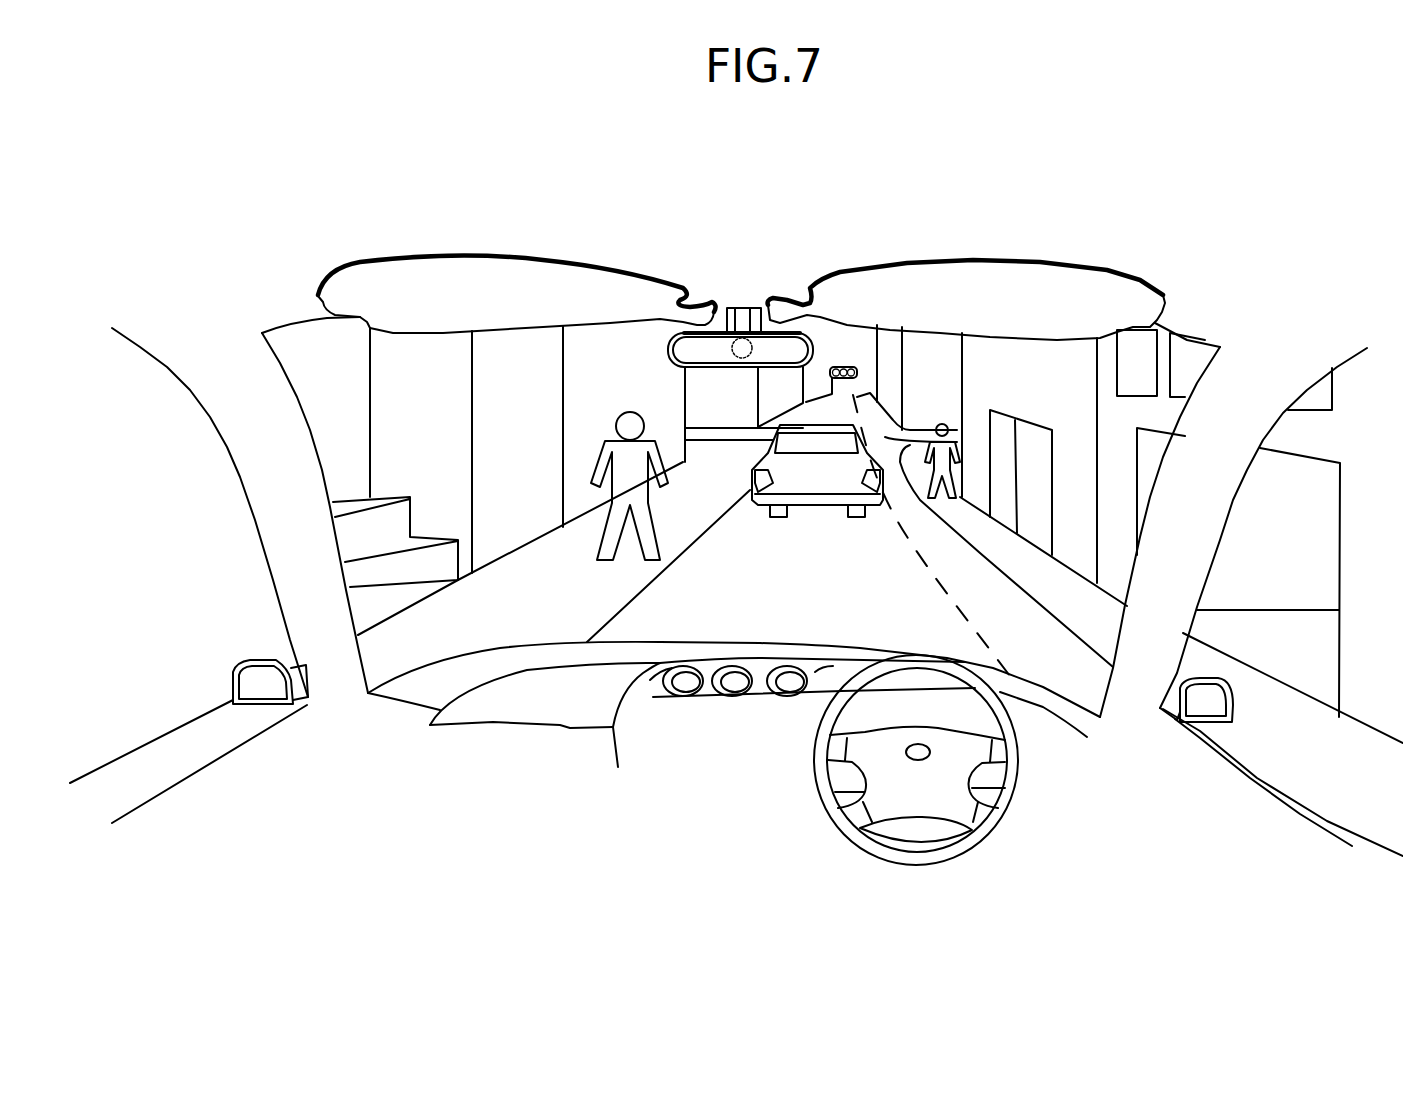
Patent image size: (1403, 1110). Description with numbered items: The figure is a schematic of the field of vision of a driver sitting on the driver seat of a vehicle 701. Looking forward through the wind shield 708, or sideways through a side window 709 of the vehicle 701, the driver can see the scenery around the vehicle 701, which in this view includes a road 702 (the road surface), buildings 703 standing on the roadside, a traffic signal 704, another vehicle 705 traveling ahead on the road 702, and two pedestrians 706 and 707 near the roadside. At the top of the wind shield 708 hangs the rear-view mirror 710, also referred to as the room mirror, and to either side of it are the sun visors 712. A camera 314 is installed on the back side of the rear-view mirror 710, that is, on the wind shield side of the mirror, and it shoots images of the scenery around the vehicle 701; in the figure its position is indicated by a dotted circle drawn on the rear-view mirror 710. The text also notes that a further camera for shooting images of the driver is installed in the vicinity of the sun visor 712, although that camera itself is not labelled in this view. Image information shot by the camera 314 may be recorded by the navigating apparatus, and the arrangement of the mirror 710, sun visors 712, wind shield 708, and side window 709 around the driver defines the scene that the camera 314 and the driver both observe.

The camera 314 is at (750, 338).
The vehicle 701 is at (672, 788).
The road 702 is at (878, 587).
The buildings 703 is at (612, 358).
The traffic signal 704 is at (850, 366).
The another vehicle 705 is at (757, 508).
The pedestrian 706 is at (657, 512).
The pedestrian 707 is at (958, 442).
The wind shield 708 is at (312, 350).
The side window 709 is at (1350, 388).
The rear-view mirror 710 is at (727, 333).
The sun visor 712 is at (437, 287).